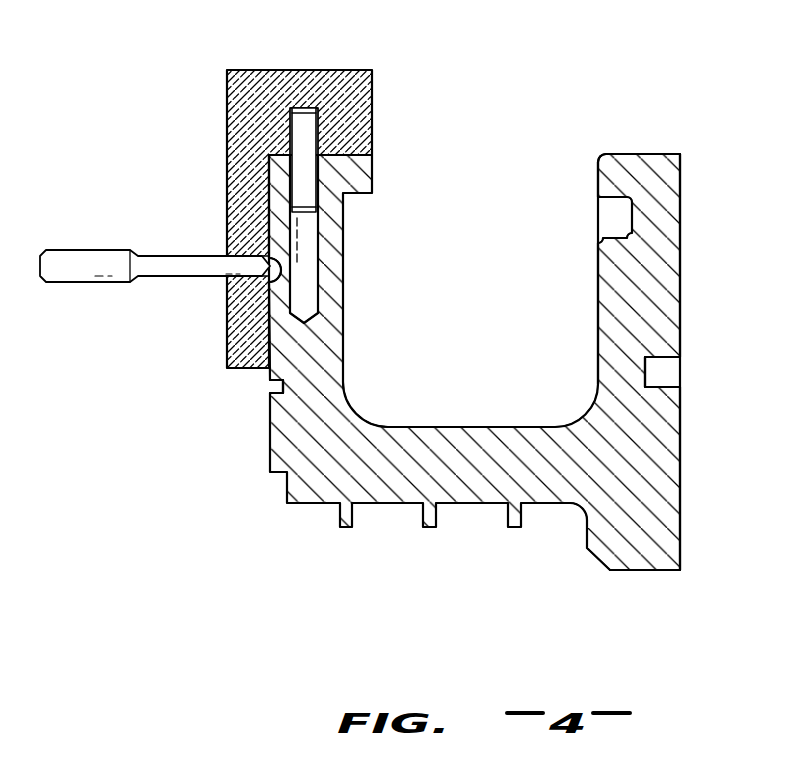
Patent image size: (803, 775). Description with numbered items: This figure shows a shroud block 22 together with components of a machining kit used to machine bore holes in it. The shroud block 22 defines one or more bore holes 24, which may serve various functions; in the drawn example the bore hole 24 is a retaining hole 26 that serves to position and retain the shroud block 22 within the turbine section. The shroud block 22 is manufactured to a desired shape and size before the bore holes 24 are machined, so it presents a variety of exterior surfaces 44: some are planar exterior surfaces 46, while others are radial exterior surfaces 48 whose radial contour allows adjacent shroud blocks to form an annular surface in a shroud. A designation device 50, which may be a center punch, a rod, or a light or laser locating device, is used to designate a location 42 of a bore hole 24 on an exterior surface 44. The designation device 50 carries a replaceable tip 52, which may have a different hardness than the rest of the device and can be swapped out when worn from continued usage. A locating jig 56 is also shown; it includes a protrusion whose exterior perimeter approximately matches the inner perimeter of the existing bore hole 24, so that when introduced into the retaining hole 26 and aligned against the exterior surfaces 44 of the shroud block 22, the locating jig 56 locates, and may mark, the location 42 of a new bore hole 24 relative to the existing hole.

The shroud block 22 is at (410, 330).
The bore hole 24 is at (322, 268).
The retaining hole 26 is at (308, 302).
The location 42 is at (270, 285).
The exterior surface 44 is at (660, 149).
The planar exterior surface 46 is at (683, 417).
The radial exterior surface 48 is at (347, 153).
The designation device 50 is at (106, 250).
The replaceable tip 52 is at (268, 272).
The locating jig 56 is at (323, 83).